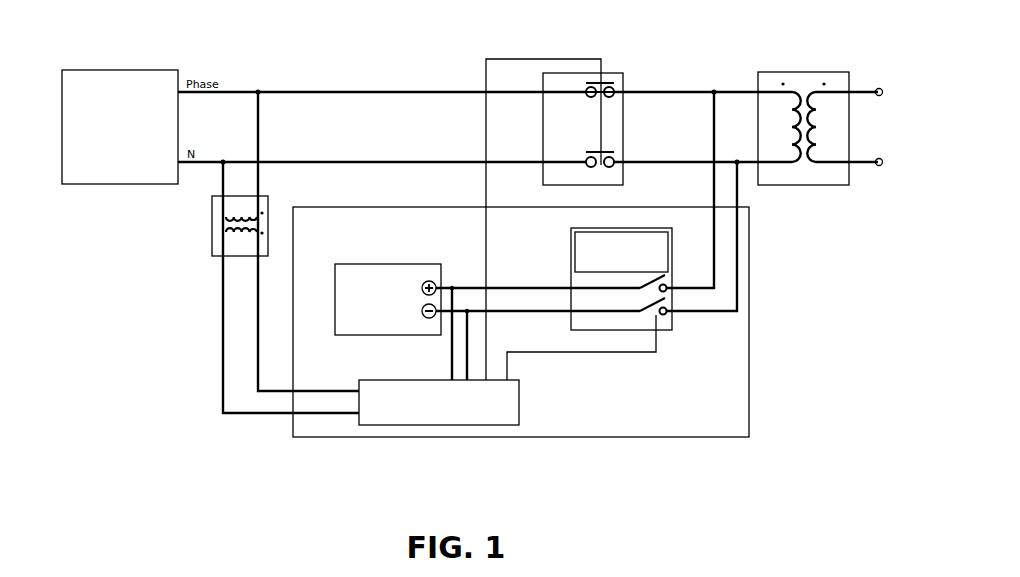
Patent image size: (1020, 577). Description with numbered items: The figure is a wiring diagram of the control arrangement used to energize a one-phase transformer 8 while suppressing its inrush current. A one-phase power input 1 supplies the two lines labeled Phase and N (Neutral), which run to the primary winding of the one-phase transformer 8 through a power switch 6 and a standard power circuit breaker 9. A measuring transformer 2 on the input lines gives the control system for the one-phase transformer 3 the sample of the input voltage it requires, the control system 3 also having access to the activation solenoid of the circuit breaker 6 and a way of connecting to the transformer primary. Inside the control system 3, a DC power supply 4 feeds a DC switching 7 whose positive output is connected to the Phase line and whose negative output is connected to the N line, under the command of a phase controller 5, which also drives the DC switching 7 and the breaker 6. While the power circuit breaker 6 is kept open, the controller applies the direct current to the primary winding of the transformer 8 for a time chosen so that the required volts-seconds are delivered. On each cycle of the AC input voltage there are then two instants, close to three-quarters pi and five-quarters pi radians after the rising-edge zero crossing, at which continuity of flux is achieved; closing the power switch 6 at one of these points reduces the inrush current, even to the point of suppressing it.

The one-phase power input 1 is at (98, 70).
The measuring transformer 2 is at (208, 227).
The control system for one-phase transformer 3 is at (370, 207).
The DC power supply 4 is at (335, 300).
The phase controller 5 is at (519, 405).
The power switch 6 is at (620, 72).
The DC switching 7 is at (570, 240).
The one-phase transformer 8 is at (843, 72).
The standard power circuit breaker 9 is at (622, 83).